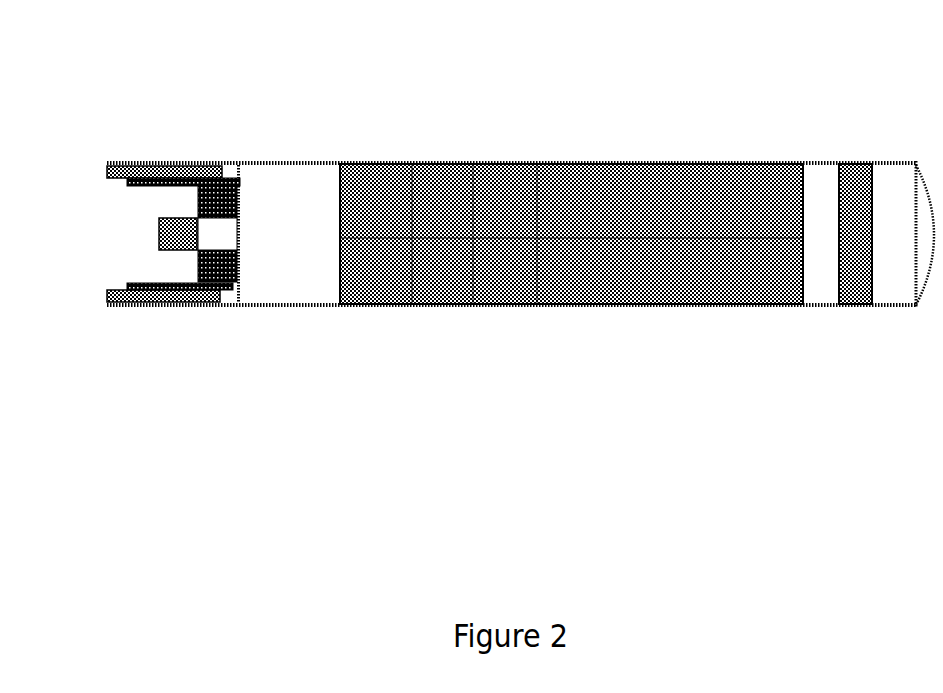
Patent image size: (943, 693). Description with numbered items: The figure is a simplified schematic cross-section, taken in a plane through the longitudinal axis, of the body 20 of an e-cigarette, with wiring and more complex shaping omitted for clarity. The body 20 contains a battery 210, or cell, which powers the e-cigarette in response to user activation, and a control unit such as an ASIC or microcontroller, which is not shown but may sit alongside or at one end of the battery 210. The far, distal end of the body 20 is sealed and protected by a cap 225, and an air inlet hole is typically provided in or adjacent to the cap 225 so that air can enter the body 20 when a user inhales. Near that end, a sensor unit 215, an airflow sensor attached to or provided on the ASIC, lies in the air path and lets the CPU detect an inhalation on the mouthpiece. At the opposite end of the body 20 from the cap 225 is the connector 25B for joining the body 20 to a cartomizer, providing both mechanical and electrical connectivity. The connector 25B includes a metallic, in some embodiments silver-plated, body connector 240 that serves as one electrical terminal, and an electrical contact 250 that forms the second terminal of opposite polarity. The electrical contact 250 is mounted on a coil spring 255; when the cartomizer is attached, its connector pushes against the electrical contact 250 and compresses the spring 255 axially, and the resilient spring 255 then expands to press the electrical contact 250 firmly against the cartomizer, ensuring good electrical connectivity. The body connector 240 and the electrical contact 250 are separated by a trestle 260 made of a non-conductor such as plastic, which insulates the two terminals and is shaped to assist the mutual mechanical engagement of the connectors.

The body 20 is at (511, 363).
The battery 210 is at (571, 194).
The sensor unit 215 is at (802, 161).
The cap 225 is at (888, 162).
The connector 25B is at (142, 105).
The body connector 240 is at (127, 359).
The electrical contact 250 is at (130, 351).
The coil spring 255 is at (169, 388).
The trestle 260 is at (222, 180).